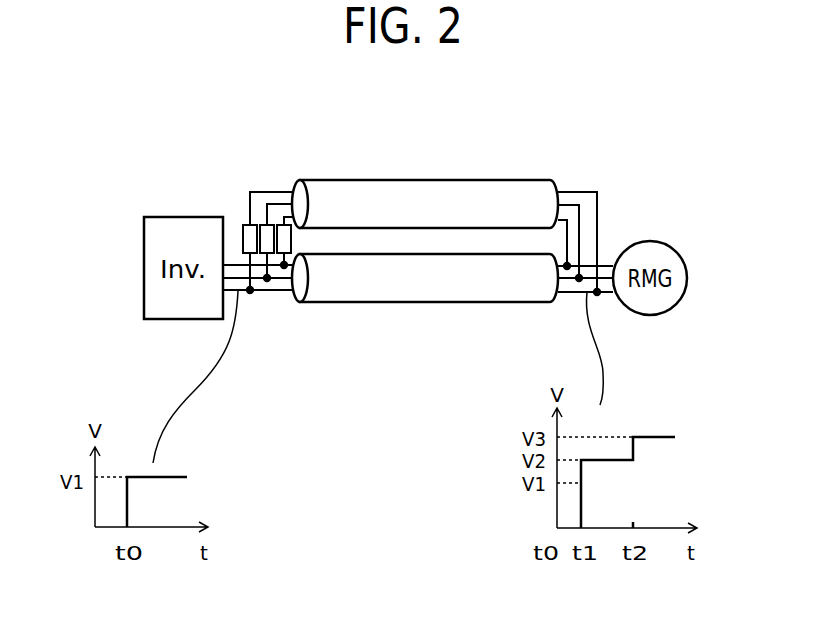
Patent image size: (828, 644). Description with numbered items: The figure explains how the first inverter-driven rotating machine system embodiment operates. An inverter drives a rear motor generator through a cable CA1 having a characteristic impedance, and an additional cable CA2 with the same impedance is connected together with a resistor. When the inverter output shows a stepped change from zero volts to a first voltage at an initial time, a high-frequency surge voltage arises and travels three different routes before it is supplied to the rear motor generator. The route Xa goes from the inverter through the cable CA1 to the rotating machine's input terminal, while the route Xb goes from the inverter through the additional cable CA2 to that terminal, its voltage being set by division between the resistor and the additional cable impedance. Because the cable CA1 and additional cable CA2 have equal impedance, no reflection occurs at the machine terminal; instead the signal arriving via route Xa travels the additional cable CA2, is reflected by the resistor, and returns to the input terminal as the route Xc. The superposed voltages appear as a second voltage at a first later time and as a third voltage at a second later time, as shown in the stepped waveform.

The cable CA1 is at (435, 304).
The additional cable CA2 is at (435, 180).
The route Xa is at (250, 345).
The route Xb is at (232, 187).
The route Xc is at (576, 165).